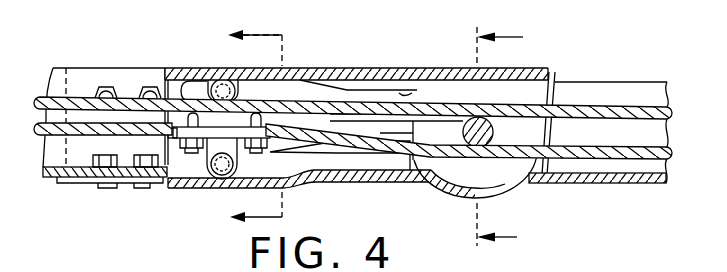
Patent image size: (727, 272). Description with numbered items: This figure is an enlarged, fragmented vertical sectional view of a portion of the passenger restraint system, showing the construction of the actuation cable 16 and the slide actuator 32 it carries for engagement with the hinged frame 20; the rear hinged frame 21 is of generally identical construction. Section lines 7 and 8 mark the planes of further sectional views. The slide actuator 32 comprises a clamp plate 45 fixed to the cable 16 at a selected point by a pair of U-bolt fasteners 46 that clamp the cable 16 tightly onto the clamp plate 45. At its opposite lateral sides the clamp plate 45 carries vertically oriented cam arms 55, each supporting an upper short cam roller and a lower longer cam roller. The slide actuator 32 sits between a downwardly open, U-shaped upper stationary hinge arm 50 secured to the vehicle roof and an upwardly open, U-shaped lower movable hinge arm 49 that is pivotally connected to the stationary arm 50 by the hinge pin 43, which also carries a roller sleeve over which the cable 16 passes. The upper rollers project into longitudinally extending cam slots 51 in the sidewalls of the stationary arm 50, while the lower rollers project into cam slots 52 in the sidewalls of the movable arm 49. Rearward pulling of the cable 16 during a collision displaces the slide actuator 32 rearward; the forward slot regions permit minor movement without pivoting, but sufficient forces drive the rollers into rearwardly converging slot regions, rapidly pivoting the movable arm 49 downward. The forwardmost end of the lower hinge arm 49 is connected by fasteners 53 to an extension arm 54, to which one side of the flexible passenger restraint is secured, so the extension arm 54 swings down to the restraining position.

The section line 7- 7 is at (514, 137).
The section line 8- 8 is at (239, 126).
The actuation cable 16 is at (598, 159).
The hinged frame 20 is at (380, 27).
The hinged frame 21 is at (670, 86).
The slide actuator 32 is at (195, 82).
The hinge pin 43 is at (478, 150).
The clamp plate 45 is at (271, 136).
The U-bolt fasteners 46 is at (252, 120).
The lower movable hinge arm 49 is at (389, 176).
The upper stationary hinge arm 50 is at (424, 72).
The cam slots 51 is at (412, 93).
The cam slots 52 is at (284, 178).
The fasteners 53 is at (146, 185).
The extension arm 54 is at (56, 178).
The cam arms 55 is at (231, 88).